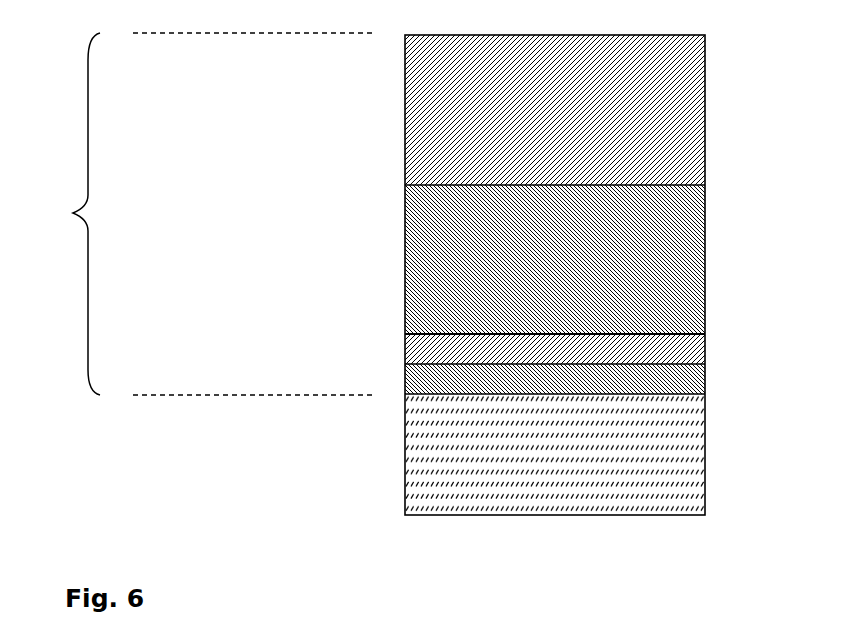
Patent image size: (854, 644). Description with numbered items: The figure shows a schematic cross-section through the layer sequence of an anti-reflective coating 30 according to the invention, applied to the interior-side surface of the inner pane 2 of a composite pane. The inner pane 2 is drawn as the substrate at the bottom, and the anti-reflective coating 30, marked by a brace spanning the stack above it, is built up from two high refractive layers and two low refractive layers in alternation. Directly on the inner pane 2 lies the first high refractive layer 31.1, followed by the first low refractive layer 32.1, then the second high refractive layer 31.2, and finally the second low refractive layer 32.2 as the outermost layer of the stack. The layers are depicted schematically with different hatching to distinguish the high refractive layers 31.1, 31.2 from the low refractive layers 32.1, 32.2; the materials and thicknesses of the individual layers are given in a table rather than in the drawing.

The anti-reflective coating 30 is at (193, 214).
The low refractive layer 32.2 is at (645, 115).
The high refractive layer 31.2 is at (437, 258).
The low refractive layer 32.1 is at (645, 347).
The high refractive layer 31.1 is at (437, 375).
The inner pane 2 is at (670, 458).